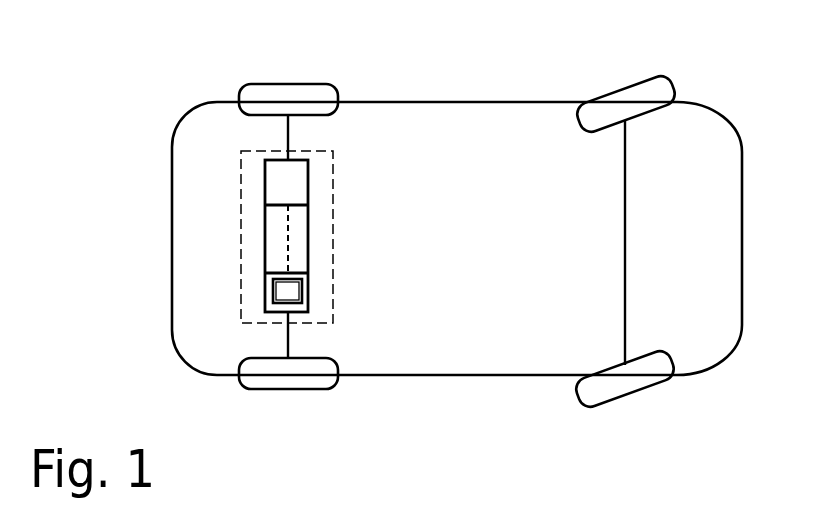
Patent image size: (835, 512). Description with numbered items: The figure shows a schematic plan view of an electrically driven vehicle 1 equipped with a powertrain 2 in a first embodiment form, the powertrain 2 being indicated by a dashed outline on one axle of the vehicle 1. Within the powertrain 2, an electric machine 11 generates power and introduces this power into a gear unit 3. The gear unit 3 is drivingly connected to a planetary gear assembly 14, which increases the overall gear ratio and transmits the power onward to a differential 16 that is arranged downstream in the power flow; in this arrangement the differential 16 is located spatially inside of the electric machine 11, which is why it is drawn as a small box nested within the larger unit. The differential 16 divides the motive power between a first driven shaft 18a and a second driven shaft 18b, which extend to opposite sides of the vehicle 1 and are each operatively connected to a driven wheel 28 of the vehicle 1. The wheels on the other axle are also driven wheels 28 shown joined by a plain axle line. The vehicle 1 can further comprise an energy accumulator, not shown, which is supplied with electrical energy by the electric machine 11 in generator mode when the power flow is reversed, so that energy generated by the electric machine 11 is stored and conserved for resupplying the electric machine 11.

The vehicle 1 is at (720, 78).
The powertrain 2 is at (241, 217).
The gear unit 3 is at (309, 240).
The electric machine 11 is at (310, 292).
The planetary gear assembly 14 is at (309, 186).
The differential 16 is at (273, 292).
The first driven shaft 18a is at (286, 340).
The second driven shaft 18b is at (284, 128).
The driven wheel 28 is at (310, 84).